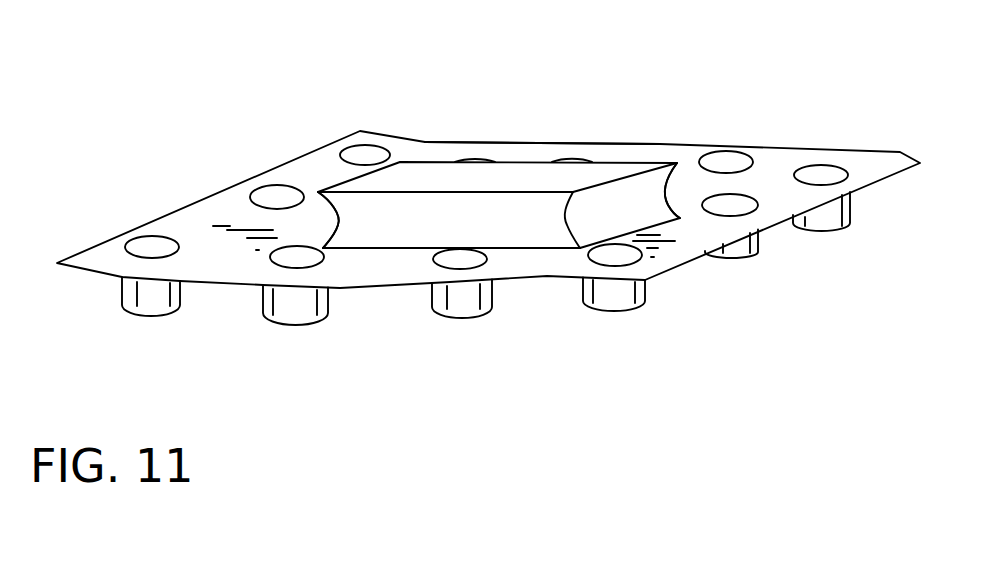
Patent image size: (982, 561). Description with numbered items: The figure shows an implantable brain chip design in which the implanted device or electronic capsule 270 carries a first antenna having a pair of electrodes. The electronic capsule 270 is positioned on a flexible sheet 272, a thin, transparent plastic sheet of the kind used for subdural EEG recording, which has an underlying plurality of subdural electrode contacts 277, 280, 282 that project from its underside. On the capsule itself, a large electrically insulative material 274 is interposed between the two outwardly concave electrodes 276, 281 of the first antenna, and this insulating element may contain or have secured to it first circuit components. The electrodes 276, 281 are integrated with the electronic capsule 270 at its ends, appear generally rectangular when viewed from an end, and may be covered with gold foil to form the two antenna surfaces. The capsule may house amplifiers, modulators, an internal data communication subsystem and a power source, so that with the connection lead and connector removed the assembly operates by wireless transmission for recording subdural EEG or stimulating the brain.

The electronic capsule 270 is at (428, 175).
The flexible sheet 272 is at (637, 153).
The electrically insulative material 274 is at (515, 222).
The electrode 276 is at (660, 197).
The electrode 281 is at (328, 224).
The subdural electrode contact 277 is at (122, 300).
The subdural electrode contact 280 is at (277, 307).
The subdural electrode contact 282 is at (438, 302).